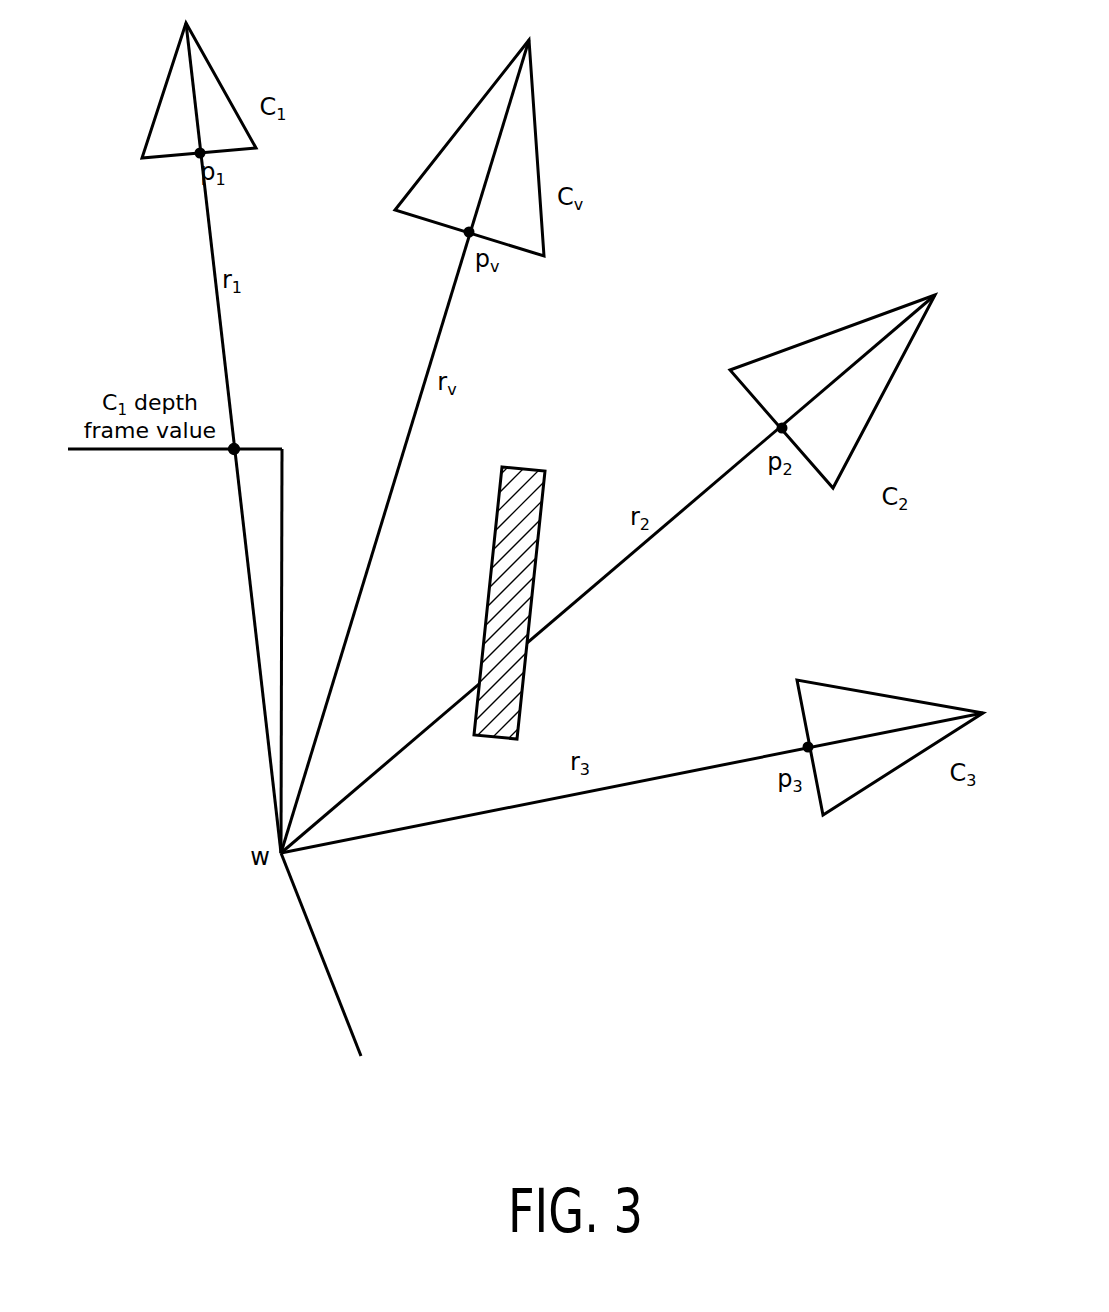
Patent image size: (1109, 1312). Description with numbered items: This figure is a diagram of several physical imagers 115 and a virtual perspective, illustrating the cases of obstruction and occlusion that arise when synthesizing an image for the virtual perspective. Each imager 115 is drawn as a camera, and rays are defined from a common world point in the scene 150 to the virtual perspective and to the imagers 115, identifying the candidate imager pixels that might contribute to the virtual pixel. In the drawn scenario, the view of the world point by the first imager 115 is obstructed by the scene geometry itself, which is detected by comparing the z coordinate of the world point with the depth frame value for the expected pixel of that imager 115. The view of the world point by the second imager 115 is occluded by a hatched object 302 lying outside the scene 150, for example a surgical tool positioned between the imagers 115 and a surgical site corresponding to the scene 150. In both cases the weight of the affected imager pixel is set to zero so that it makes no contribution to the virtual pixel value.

The imager 115 is at (178, 48).
The object 302 is at (519, 467).
The scene 150 is at (315, 954).